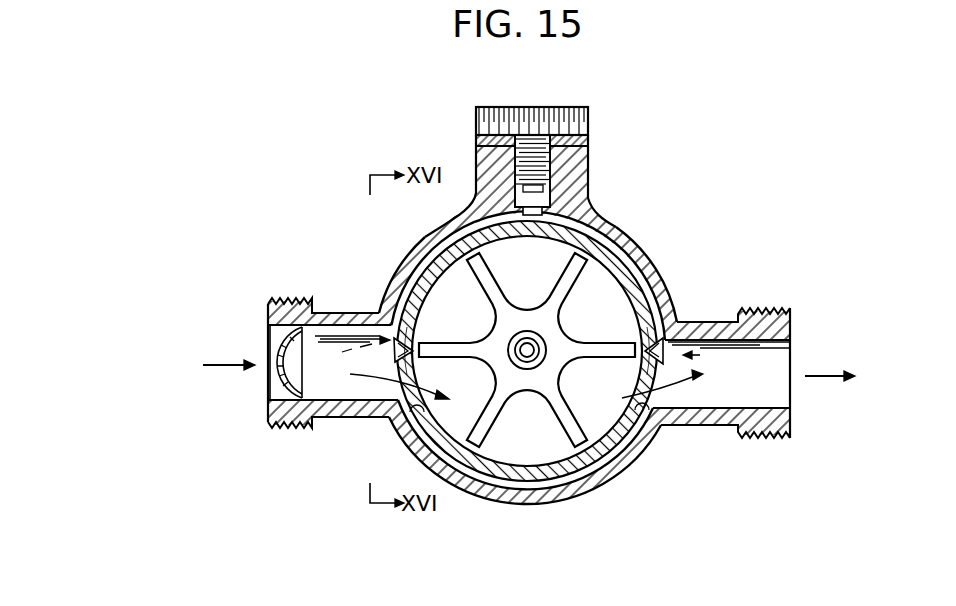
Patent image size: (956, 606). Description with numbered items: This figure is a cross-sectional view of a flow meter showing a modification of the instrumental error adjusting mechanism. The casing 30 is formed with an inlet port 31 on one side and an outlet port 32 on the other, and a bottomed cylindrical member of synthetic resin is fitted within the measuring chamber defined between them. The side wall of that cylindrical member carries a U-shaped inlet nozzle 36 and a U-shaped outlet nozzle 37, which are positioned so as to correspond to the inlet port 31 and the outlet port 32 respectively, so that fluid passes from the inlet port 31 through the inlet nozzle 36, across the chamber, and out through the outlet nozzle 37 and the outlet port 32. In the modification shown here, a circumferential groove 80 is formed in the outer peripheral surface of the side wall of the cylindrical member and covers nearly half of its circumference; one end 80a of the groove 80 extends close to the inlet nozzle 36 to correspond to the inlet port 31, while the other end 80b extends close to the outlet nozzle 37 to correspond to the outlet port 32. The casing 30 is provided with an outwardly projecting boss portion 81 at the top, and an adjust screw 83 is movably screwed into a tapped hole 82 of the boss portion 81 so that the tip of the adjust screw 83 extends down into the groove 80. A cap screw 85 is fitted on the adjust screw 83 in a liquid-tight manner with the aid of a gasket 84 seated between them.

The casing 30 is at (554, 511).
The inlet port 31 is at (345, 400).
The outlet port 32 is at (761, 408).
The inlet nozzle 36 is at (408, 430).
The outlet nozzle 37 is at (657, 430).
The circumferential groove 80 is at (632, 262).
The one end of the groove 80a is at (400, 341).
The other end of the groove 80b is at (658, 342).
The boss portion 81 is at (584, 178).
The tapped hole 82 is at (518, 157).
The adjust screw 83 is at (548, 205).
The gasket 84 is at (588, 141).
The cap screw 85 is at (581, 107).